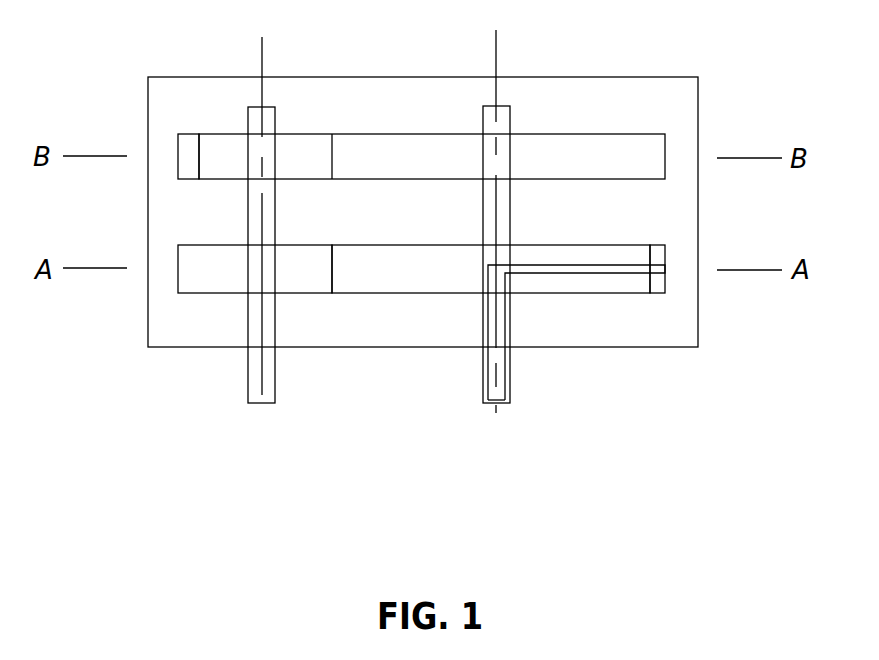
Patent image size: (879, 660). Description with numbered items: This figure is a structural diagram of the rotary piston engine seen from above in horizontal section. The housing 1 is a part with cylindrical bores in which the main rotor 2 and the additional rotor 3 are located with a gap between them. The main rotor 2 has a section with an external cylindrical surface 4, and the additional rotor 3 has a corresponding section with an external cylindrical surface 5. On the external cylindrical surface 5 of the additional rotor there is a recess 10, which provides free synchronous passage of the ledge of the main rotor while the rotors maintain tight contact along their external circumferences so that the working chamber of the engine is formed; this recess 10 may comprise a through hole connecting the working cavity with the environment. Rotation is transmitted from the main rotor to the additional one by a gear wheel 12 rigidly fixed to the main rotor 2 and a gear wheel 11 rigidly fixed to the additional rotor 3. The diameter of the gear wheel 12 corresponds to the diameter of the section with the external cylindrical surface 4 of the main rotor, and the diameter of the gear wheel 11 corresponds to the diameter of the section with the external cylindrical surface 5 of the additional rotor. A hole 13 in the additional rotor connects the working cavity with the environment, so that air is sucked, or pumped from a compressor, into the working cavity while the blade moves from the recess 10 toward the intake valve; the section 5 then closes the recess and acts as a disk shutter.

The housing 1 is at (399, 212).
The main rotor 2 is at (221, 218).
The additional rotor 3 is at (562, 221).
The section with the external cylindrical surface of the main rotor 4 is at (216, 226).
The section with the external cylindrical surface of the additional rotor 5 is at (541, 259).
The recess on the external surface of the additional rotor 10 is at (704, 241).
The gear wheel rigidly fixed to the additional rotor 11 is at (478, 137).
The gear wheel rigidly fixed to the main rotor 12 is at (150, 122).
The hole connecting the working cavity with the environment 13 is at (629, 388).